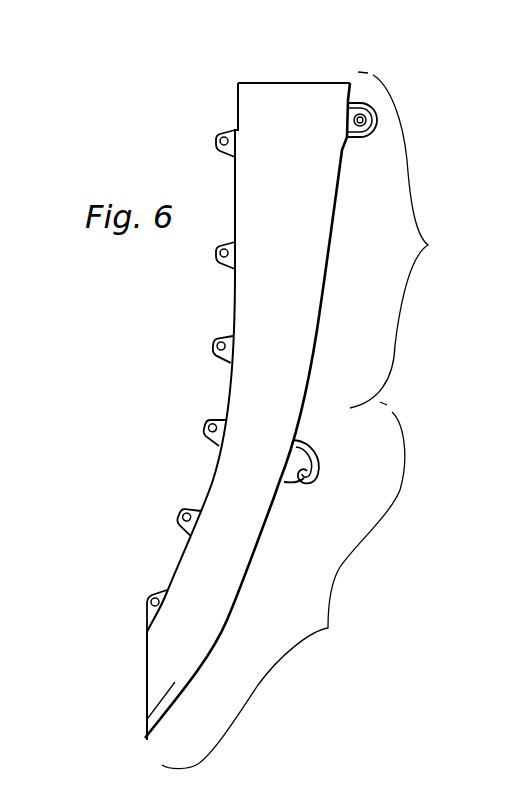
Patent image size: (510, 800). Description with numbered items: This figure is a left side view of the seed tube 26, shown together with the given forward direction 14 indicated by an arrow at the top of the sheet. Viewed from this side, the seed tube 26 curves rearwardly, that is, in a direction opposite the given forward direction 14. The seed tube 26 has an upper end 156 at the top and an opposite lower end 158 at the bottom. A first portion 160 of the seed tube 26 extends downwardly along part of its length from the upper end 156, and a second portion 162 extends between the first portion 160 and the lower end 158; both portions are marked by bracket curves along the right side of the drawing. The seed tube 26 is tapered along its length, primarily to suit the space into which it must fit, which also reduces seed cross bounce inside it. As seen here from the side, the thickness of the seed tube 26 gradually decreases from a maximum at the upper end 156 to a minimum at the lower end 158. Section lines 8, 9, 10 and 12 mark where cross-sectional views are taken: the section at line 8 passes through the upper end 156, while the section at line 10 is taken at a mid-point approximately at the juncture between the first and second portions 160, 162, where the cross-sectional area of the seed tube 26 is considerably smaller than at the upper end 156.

The given forward direction 14 is at (270, 32).
The section line 8- 8 is at (232, 62).
The upper end 156 is at (270, 83).
The section line 12- 12 is at (332, 165).
The first portion 160 is at (406, 240).
The seed tube 26 is at (314, 348).
The section line 10- 10 is at (237, 417).
The section line 9- 9 is at (40, 630).
The second portion 162 is at (283, 585).
The lower end 158 is at (157, 733).